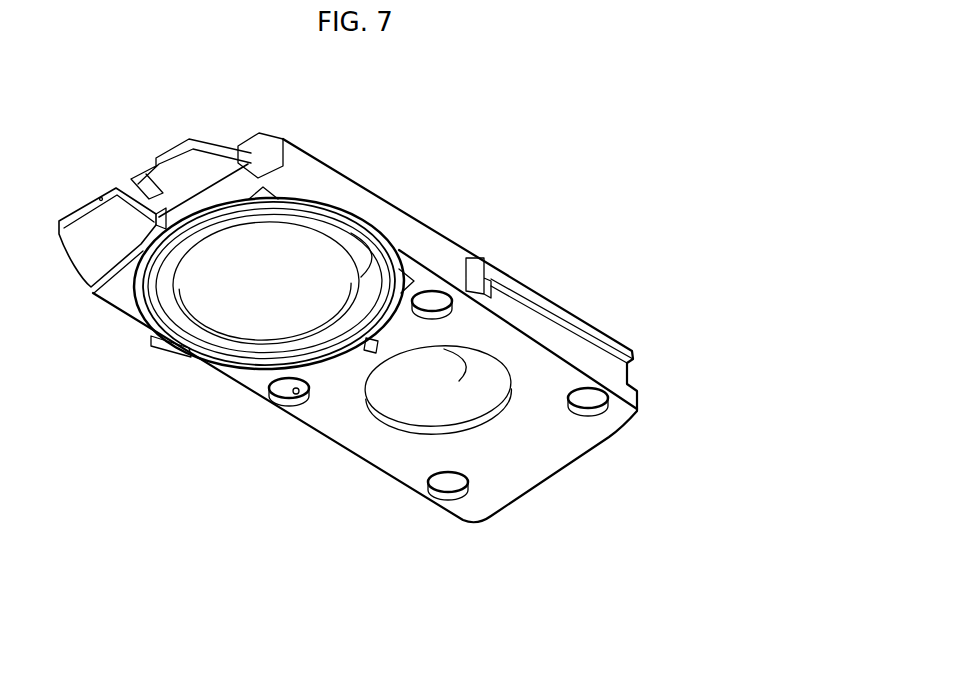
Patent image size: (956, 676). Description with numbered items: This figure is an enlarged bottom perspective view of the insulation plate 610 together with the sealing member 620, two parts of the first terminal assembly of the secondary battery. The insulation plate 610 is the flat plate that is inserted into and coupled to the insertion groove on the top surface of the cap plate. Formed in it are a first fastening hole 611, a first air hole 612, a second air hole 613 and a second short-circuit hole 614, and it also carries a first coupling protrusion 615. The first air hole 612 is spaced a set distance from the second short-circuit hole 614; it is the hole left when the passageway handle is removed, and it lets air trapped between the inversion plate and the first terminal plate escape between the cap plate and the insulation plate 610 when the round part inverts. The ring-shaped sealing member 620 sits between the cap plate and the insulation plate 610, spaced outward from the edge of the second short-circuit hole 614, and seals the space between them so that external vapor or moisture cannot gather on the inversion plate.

The insulation plate 610 is at (656, 330).
The first fastening hole 611 is at (500, 373).
The first air hole 612 is at (162, 213).
The second air hole 613 is at (272, 380).
The second short-circuit hole 614 is at (393, 250).
The first coupling protrusion 615 is at (293, 402).
The sealing member 620 is at (293, 197).